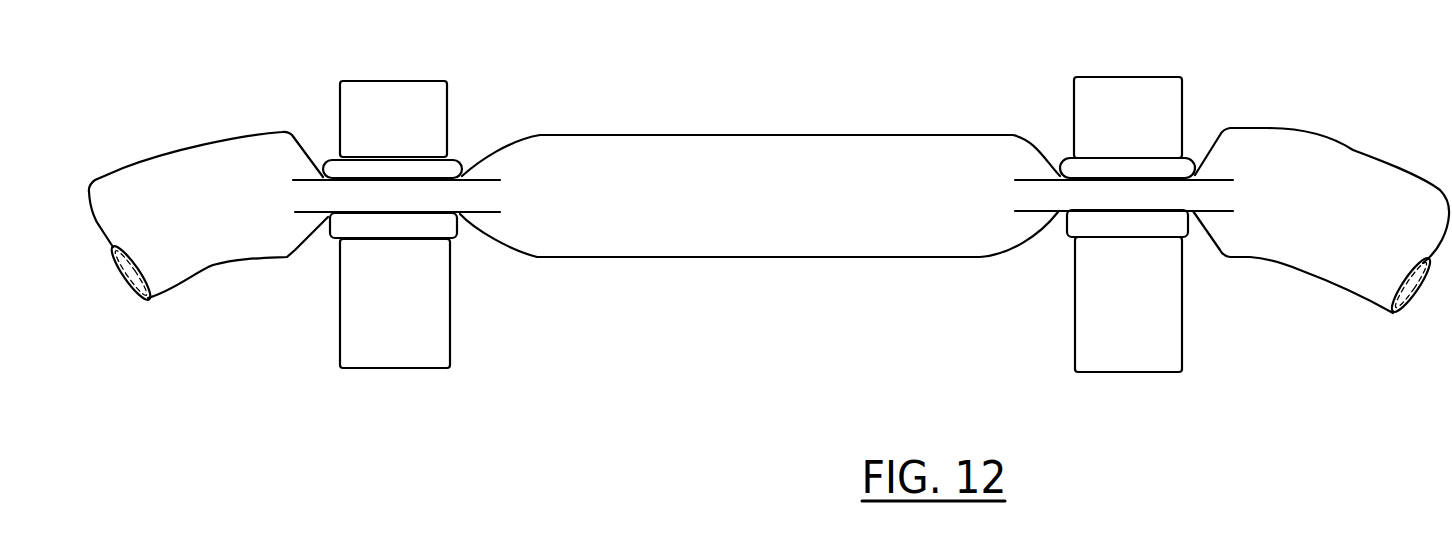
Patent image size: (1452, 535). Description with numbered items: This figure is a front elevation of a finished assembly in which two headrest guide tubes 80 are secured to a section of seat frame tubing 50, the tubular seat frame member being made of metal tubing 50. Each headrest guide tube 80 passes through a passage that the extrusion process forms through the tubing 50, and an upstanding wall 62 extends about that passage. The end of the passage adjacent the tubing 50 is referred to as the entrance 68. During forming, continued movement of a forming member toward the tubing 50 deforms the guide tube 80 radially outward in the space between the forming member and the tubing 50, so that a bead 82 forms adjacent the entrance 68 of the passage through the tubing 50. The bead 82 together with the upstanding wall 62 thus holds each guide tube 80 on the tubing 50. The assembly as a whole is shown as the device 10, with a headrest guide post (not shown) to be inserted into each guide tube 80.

The catheter device 10 is at (337, 242).
The tubing 50 is at (748, 153).
The upstanding wall 62 is at (455, 222).
The entrance 68 is at (458, 178).
The headrest guide tube 80 is at (367, 93).
The bead 82 is at (458, 177).